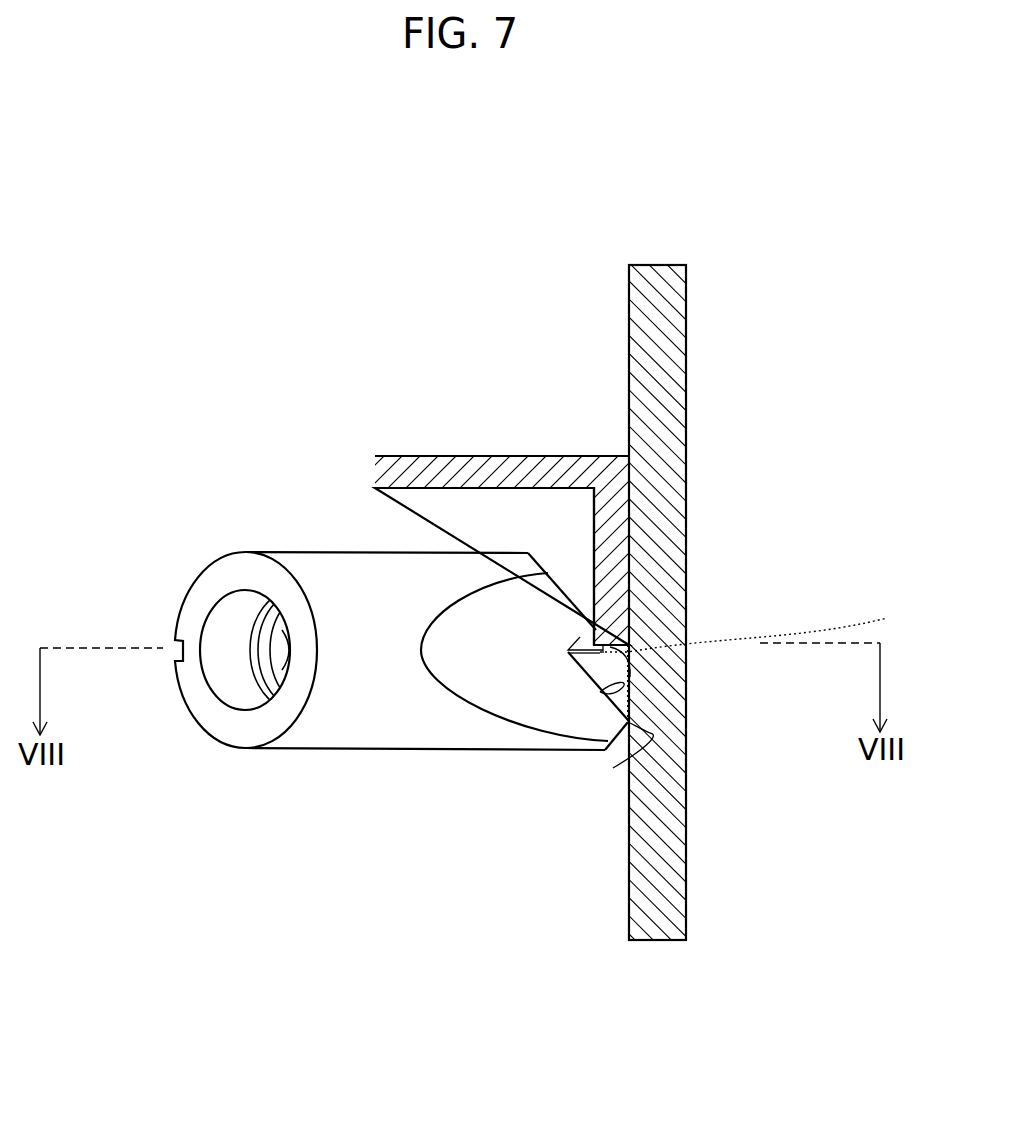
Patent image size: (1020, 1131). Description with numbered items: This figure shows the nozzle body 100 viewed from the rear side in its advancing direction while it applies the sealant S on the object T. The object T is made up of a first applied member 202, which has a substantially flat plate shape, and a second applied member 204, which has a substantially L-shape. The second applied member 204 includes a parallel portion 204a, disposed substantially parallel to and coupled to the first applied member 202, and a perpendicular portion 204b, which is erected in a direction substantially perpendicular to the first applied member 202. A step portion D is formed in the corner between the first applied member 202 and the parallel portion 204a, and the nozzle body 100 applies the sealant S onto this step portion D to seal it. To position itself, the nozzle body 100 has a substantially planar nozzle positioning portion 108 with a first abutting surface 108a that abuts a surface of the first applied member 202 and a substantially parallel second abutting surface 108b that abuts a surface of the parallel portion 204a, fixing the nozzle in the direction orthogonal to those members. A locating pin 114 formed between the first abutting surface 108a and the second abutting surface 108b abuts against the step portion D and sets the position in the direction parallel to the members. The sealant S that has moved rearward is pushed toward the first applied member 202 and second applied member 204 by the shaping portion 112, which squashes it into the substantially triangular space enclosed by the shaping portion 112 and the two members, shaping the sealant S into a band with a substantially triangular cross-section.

The nozzle body 100 is at (60, 560).
The nozzle positioning portion 108 is at (598, 640).
The first abutting surface 108a is at (606, 645).
The second abutting surface 108b is at (613, 768).
The shaping portion 112 is at (620, 684).
The locating pin 114 is at (608, 650).
The first applied member 202 is at (685, 335).
The second applied member 204 is at (594, 548).
The parallel portion 204a is at (594, 530).
The perpendicular portion 204b is at (397, 473).
The object T is at (603, 198).
The sealant S is at (753, 619).
The step portion D is at (628, 677).